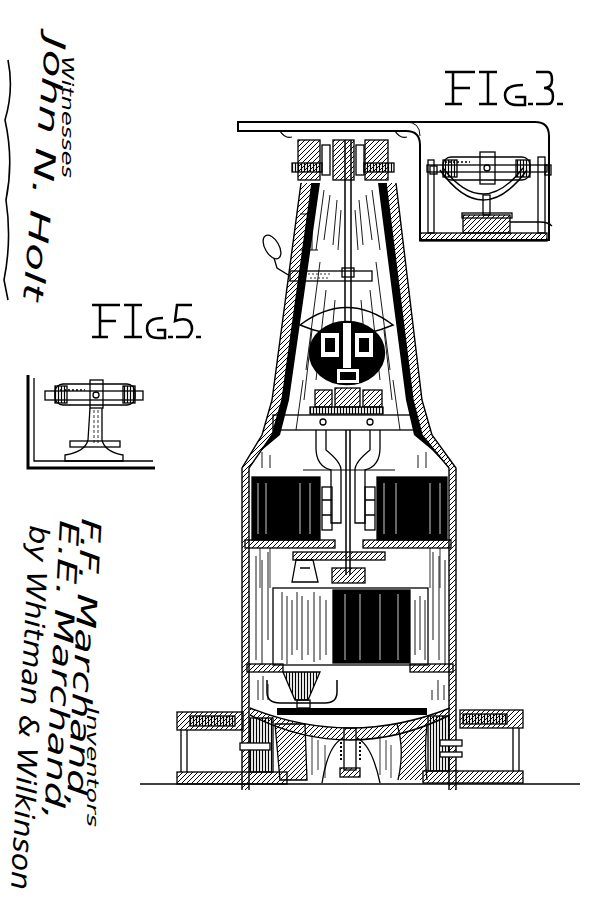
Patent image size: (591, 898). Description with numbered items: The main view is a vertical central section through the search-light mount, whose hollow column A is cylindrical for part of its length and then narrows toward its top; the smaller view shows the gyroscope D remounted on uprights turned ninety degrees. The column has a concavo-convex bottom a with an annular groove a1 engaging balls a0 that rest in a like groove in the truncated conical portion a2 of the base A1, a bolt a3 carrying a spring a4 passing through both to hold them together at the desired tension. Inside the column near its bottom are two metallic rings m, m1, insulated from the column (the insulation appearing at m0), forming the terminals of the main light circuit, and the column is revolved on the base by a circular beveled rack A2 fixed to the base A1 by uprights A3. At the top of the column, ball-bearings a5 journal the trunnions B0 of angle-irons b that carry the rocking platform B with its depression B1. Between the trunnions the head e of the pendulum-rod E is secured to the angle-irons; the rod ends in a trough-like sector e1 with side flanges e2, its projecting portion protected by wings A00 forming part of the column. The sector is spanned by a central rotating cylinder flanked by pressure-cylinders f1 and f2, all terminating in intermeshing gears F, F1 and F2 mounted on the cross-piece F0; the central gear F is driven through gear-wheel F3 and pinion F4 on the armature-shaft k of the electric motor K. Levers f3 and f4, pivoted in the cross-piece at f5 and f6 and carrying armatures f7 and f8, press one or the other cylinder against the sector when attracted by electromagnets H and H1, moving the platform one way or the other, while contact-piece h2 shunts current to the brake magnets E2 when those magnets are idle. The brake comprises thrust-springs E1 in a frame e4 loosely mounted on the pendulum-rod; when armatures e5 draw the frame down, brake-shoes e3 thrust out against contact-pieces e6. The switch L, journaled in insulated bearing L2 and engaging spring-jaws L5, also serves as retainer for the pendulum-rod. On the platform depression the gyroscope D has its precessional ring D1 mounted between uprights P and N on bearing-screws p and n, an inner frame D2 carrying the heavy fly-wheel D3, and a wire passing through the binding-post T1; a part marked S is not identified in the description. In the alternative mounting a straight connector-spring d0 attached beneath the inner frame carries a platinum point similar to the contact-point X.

In FIG. 3, the rocking platform B is at (360, 127).
In FIG. 3, the angle-irons b is at (292, 138).
In FIG. 3, the trunnions B0 is at (298, 167).
In FIG. 3, the ball-bearings a5 is at (304, 186).
In FIG. 3, the hollow column A is at (458, 580).
In FIG. 3, the switch L is at (290, 278).
In FIG. 3, the insulated bearing L2 is at (276, 240).
In FIG. 3, the spring-jaws L5 is at (300, 222).
In FIG. 3, the pendulum-rod E is at (383, 245).
In FIG. 3, the head of pendulum-rod e is at (388, 206).
In FIG. 3, the trough-like sector e1 is at (385, 352).
In FIG. 3, the side flanges e2 is at (385, 370).
In FIG. 3, the brake-shoes e3 is at (310, 345).
In FIG. 3, the frame e4 is at (318, 322).
In FIG. 3, the armatures e5 is at (310, 355).
In FIG. 3, the contact-pieces e6 is at (312, 335).
In FIG. 3, the thrust-springs E1 is at (370, 312).
In FIG. 3, the electromagnets E2 is at (312, 365).
In FIG. 3, the wings A00 is at (395, 345).
In FIG. 3, the pressure-cylinder f2 is at (314, 393).
In FIG. 3, the pressure-cylinder f1 is at (384, 398).
In FIG. 3, the gear F2 is at (300, 422).
In FIG. 3, the gear F1 is at (416, 422).
In FIG. 3, the central gear F is at (362, 470).
In FIG. 3, the pivot point f5 is at (300, 440).
In FIG. 3, the lever f4 is at (295, 460).
In FIG. 3, the pivot point f6 is at (420, 412).
In FIG. 3, the cross-piece F0 is at (432, 433).
In FIG. 3, the lever f3 is at (445, 470).
In FIG. 3, the electromagnet H is at (448, 490).
In FIG. 3, the electromagnet H1 is at (258, 500).
In FIG. 3, the contact-piece h2 is at (326, 488).
In FIG. 3, the armature f7 is at (448, 508).
In FIG. 3, the armature f8 is at (252, 530).
In FIG. 3, the gear-wheel F3 is at (450, 546).
In FIG. 3, the pinion F4 is at (296, 560).
In FIG. 3, the armature-shaft k is at (308, 570).
In FIG. 3, the electric motor K is at (412, 605).
In FIG. 3, the balls a0 is at (267, 684).
In FIG. 3, the concavo-convex bottom a is at (430, 705).
In FIG. 3, the annular groove a1 is at (262, 708).
In FIG. 3, the truncated conical portion a2 is at (432, 782).
In FIG. 3, the bolt a3 is at (330, 786).
In FIG. 3, the spring a4 is at (368, 786).
In FIG. 3, the circular beveled rack A2 is at (190, 715).
In FIG. 3, the base A1 is at (476, 785).
In FIG. 3, the uprights A3 is at (181, 748).
In FIG. 3, the metallic ring m is at (472, 712).
In FIG. 3, the ring part m0 is at (240, 746).
In FIG. 3, the metallic ring m1 is at (462, 754).
In FIG. 3, the depression B1 is at (515, 241).
In FIG. 5, the depression B1 is at (108, 470).
In FIG. 3, the upright P is at (434, 214).
In FIG. 3, the upright N is at (546, 210).
In FIG. 3, the bearing-screw p is at (432, 165).
In FIG. 3, the bearing-screw n is at (551, 168).
In FIG. 3, the gyroscope D is at (505, 158).
In FIG. 5, the gyroscope D is at (115, 386).
In FIG. 3, the precessional ring D1 is at (458, 158).
In FIG. 5, the precessional ring D1 is at (65, 388).
In FIG. 3, the inner frame D2 is at (488, 152).
In FIG. 5, the inner frame D2 is at (99, 380).
In FIG. 3, the fly-wheel D3 is at (520, 186).
In FIG. 5, the fly-wheel D3 is at (122, 405).
In FIG. 3, the binding-post T1 is at (488, 235).
In FIG. 3, the arm S is at (552, 226).
In FIG. 5, the connector-spring d0 is at (90, 428).
In FIG. 5, the platinum contact-point X is at (120, 446).